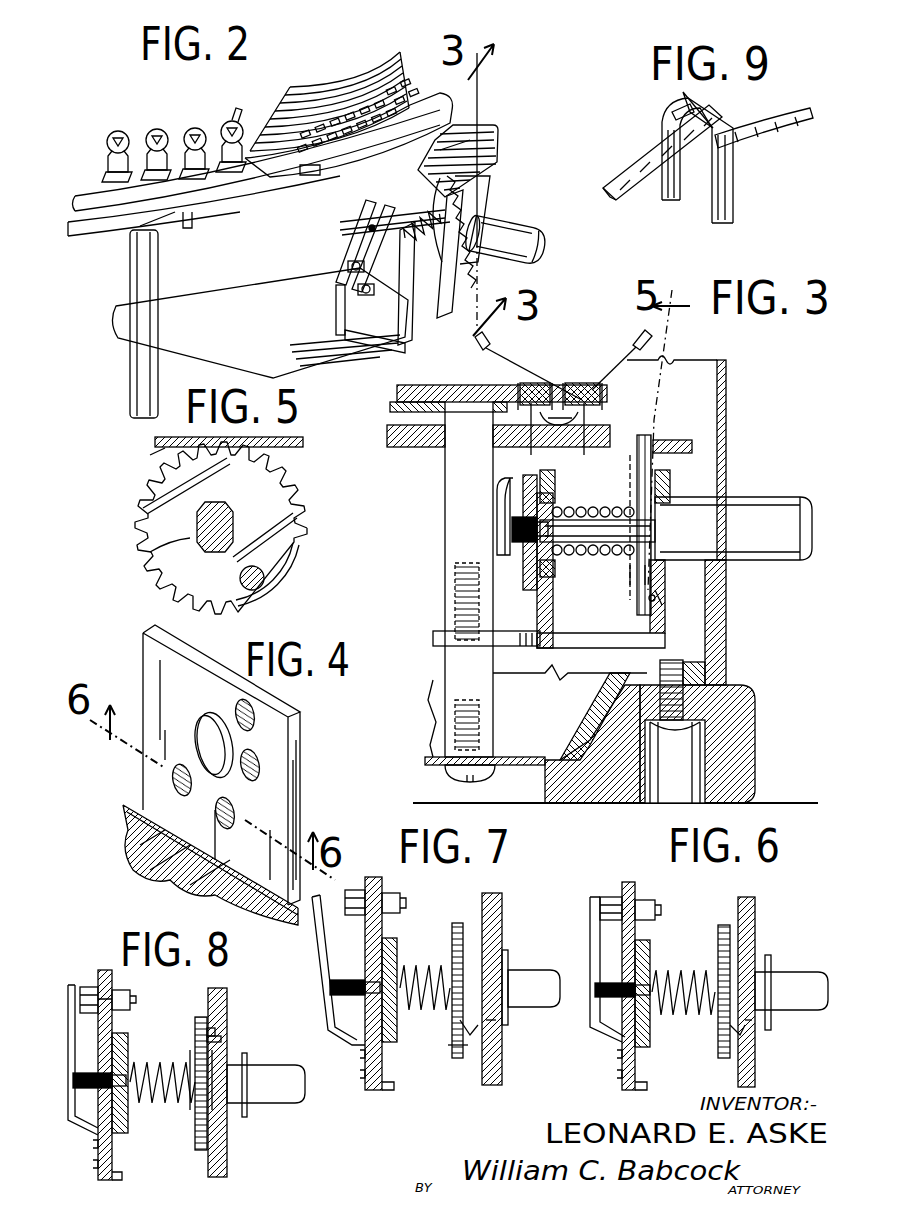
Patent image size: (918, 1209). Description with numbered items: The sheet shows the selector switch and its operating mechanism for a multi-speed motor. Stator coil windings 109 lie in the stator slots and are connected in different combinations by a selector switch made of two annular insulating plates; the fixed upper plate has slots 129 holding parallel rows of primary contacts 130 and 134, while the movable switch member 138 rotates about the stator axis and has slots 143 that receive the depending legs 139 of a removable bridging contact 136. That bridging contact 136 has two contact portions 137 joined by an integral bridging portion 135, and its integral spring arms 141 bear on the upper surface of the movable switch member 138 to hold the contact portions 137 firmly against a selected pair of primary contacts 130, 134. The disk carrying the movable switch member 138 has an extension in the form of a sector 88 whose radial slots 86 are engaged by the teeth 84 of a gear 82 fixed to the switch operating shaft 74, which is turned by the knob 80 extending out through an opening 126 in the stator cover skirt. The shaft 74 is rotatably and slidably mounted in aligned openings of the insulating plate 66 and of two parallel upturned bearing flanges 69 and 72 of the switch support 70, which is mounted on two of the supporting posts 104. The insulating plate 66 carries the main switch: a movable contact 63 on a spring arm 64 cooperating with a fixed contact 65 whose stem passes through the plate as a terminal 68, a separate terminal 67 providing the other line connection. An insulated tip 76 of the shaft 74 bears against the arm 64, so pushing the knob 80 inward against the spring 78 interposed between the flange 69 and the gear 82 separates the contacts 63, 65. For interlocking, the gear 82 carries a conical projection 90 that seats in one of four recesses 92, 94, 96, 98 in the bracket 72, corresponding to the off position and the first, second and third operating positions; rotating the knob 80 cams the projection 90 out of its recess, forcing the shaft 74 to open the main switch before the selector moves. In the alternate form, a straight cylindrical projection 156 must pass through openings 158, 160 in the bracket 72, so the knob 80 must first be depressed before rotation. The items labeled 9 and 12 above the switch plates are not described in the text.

In FIG. 3, the contact tool 9 is at (640, 338).
In FIG. 3, the contact tool 12 is at (487, 340).
In FIG. 2, the main switch contact 63 is at (347, 265).
In FIG. 2, the spring arm 64 is at (380, 215).
In FIG. 3, the spring arm 64 is at (498, 502).
In FIG. 8, the spring arm 64 is at (70, 1010).
In FIG. 7, the spring arm 64 is at (327, 1011).
In FIG. 6, the spring arm 64 is at (606, 1040).
In FIG. 2, the main switch contact 65 is at (357, 284).
In FIG. 2, the insulating plate 66 is at (336, 310).
In FIG. 3, the insulating plate 66 is at (527, 590).
In FIG. 8, the insulating plate 66 is at (100, 1160).
In FIG. 7, the insulating plate 66 is at (373, 878).
In FIG. 6, the insulating plate 66 is at (629, 882).
In FIG. 2, the terminal 67 is at (370, 350).
In FIG. 2, the terminal 68 is at (410, 338).
In FIG. 2, the bearing flange 69 is at (392, 276).
In FIG. 3, the bearing flange 69 is at (542, 617).
In FIG. 8, the bearing flange 69 is at (122, 1115).
In FIG. 7, the bearing flange 69 is at (390, 940).
In FIG. 6, the bearing flange 69 is at (650, 945).
In FIG. 2, the switch support 70 is at (338, 366).
In FIG. 3, the switch support 70 is at (547, 655).
In FIG. 4, the switch support 70 is at (150, 870).
In FIG. 2, the bearing flange 72 is at (455, 300).
In FIG. 3, the bearing flange 72 is at (665, 622).
In FIG. 4, the bearing flange 72 is at (298, 788).
In FIG. 8, the bearing flange 72 is at (226, 1000).
In FIG. 7, the bearing flange 72 is at (500, 905).
In FIG. 6, the bearing flange 72 is at (746, 992).
In FIG. 2, the switch operating shaft 74 is at (455, 290).
In FIG. 3, the switch operating shaft 74 is at (665, 520).
In FIG. 5, the switch operating shaft 74 is at (300, 510).
In FIG. 2, the insulated tip 76 is at (338, 226).
In FIG. 3, the insulated tip 76 is at (510, 526).
In FIG. 8, the insulated tip 76 is at (78, 1090).
In FIG. 7, the insulated tip 76 is at (340, 980).
In FIG. 6, the insulated tip 76 is at (598, 992).
In FIG. 2, the spring 78 is at (440, 302).
In FIG. 3, the spring 78 is at (572, 506).
In FIG. 8, the spring 78 is at (145, 1060).
In FIG. 7, the spring 78 is at (415, 975).
In FIG. 6, the spring 78 is at (672, 970).
In FIG. 2, the knob 80 is at (520, 226).
In FIG. 3, the knob 80 is at (785, 505).
In FIG. 8, the knob 80 is at (275, 1085).
In FIG. 7, the knob 80 is at (530, 975).
In FIG. 6, the knob 80 is at (800, 975).
In FIG. 2, the gear 82 is at (482, 200).
In FIG. 3, the gear 82 is at (630, 572).
In FIG. 5, the gear 82 is at (160, 560).
In FIG. 8, the gear 82 is at (191, 1048).
In FIG. 7, the gear 82 is at (452, 1048).
In FIG. 2, the teeth 84 is at (486, 212).
In FIG. 3, the teeth 84 is at (643, 433).
In FIG. 5, the teeth 84 is at (302, 482).
In FIG. 8, the teeth 84 is at (197, 1135).
In FIG. 7, the teeth 84 is at (455, 1058).
In FIG. 6, the teeth 84 is at (718, 1055).
In FIG. 2, the radial slots 86 is at (472, 142).
In FIG. 3, the radial slots 86 is at (652, 472).
In FIG. 5, the radial slots 86 is at (152, 456).
In FIG. 2, the sector 88 is at (499, 132).
In FIG. 3, the sector 88 is at (675, 440).
In FIG. 5, the sector 88 is at (300, 440).
In FIG. 3, the conical projection 90 is at (647, 600).
In FIG. 5, the conical projection 90 is at (264, 580).
In FIG. 7, the conical projection 90 is at (470, 1036).
In FIG. 6, the conical projection 90 is at (745, 1032).
In FIG. 3, the recess 92 is at (664, 598).
In FIG. 4, the recess 92 is at (175, 785).
In FIG. 7, the recess 92 is at (500, 1025).
In FIG. 6, the recess 92 is at (755, 1025).
In FIG. 4, the recess 94 is at (234, 808).
In FIG. 7, the recess 94 is at (495, 945).
In FIG. 6, the recess 94 is at (750, 945).
In FIG. 4, the recess 96 is at (257, 760).
In FIG. 4, the recess 98 is at (250, 722).
In FIG. 2, the supporting post 104 is at (135, 282).
In FIG. 3, the supporting post 104 is at (458, 672).
In FIG. 2, the stator coil windings 109 is at (336, 88).
In FIG. 3, the opening 126 is at (726, 575).
In FIG. 2, the slots 129 is at (447, 130).
In FIG. 3, the primary contact 130 is at (588, 383).
In FIG. 2, the primary contact 134 is at (132, 150).
In FIG. 3, the primary contact 134 is at (533, 383).
In FIG. 9, the bridging portion 135 is at (676, 118).
In FIG. 9, the bridging contact 136 is at (634, 122).
In FIG. 9, the contact portions 137 is at (690, 110).
In FIG. 2, the movable switch member 138 is at (447, 140).
In FIG. 2, the depending legs 139 is at (186, 230).
In FIG. 9, the depending legs 139 is at (715, 200).
In FIG. 3, the depending legs 139 is at (530, 452).
In FIG. 2, the spring arms 141 is at (130, 215).
In FIG. 9, the spring arms 141 is at (640, 178).
In FIG. 3, the slots 143 is at (495, 448).
In FIG. 8, the cylindrical projection 156 is at (222, 1038).
In FIG. 8, the opening 158 is at (215, 1032).
In FIG. 8, the opening 160 is at (222, 1120).